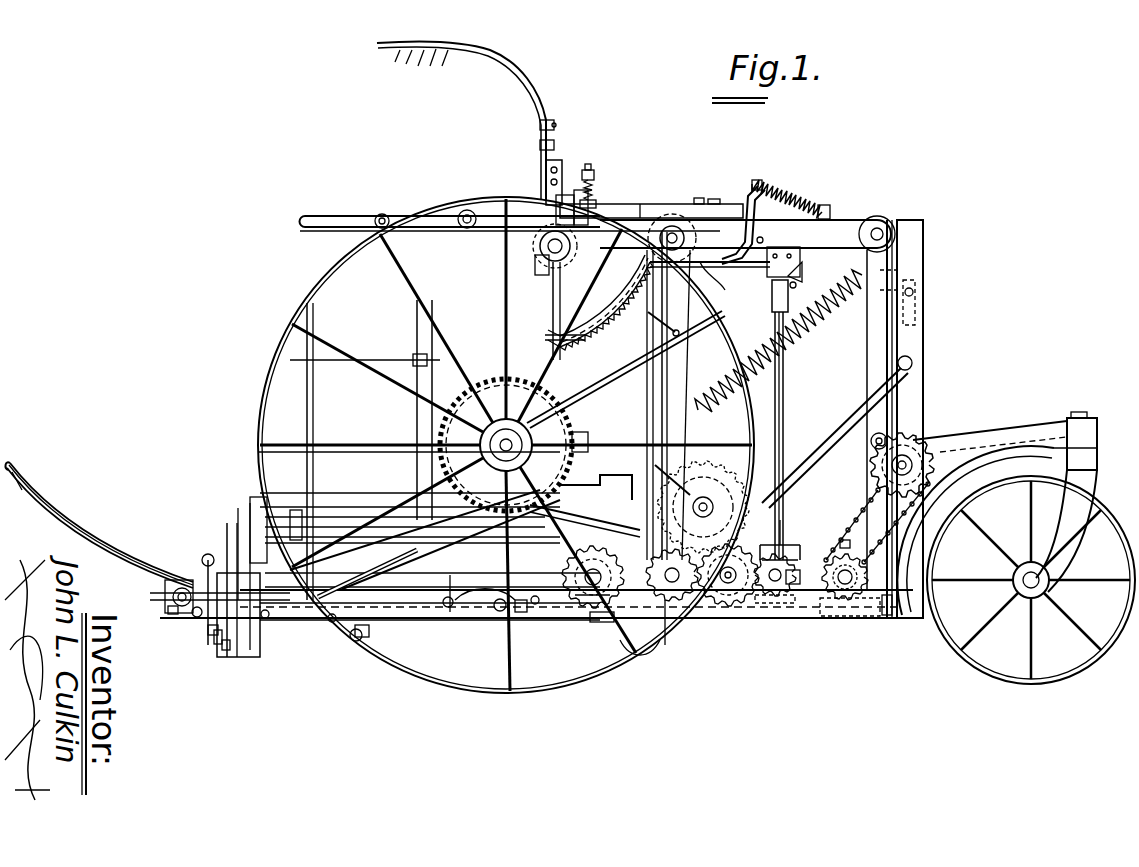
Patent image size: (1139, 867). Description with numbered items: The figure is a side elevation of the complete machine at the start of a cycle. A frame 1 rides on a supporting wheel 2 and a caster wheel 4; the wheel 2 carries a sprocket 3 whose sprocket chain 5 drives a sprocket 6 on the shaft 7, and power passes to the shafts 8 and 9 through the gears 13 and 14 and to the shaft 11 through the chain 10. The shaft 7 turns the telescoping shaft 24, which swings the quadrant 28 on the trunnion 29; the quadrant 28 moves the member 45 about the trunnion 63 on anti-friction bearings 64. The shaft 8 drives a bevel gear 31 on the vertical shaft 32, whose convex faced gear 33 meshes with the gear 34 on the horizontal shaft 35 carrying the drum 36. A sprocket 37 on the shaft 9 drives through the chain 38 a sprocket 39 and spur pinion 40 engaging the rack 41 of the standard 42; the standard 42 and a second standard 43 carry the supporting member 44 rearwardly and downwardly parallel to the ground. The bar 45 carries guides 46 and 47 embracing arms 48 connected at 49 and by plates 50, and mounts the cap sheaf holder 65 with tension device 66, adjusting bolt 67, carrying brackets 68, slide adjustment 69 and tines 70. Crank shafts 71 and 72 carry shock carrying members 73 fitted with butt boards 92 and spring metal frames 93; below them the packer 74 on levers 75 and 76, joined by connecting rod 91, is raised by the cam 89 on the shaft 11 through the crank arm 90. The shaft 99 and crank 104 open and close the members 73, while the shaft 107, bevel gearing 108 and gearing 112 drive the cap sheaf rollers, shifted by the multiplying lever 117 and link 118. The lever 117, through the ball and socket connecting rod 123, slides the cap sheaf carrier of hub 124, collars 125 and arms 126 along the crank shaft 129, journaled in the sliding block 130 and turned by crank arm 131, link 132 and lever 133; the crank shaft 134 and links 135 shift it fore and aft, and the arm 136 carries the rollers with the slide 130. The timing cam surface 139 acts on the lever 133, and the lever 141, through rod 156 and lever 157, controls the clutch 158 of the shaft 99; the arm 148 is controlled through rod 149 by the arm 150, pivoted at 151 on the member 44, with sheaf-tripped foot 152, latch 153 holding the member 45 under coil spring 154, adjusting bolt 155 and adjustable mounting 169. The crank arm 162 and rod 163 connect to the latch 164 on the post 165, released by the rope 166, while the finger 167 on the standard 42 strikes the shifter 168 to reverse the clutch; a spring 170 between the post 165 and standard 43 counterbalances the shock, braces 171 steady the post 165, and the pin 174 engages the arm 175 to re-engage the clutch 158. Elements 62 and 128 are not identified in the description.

The frame 1 is at (740, 632).
The supporting wheel 2 is at (503, 694).
The sprocket 3 is at (481, 452).
The caster wheel 4 is at (957, 652).
The sprocket chain 5 is at (588, 433).
The sprocket 6 is at (726, 608).
The shaft 7 is at (692, 612).
The shaft 8 is at (775, 600).
The shaft 9 is at (812, 606).
The chain 10 is at (656, 598).
The shaft 11 is at (585, 616).
The gear 13 is at (765, 606).
The gear 14 is at (792, 600).
The telescoping shaft 24 is at (688, 374).
The quadrant 28 is at (604, 314).
The trunnion 29 is at (672, 226).
The bevel gear 31 is at (782, 543).
The vertically arranged shaft 32 is at (785, 418).
The convex faced gear 33 is at (772, 290).
The convex faced gear 34 is at (802, 270).
The horizontal shaft 35 is at (757, 267).
The drum or cylinder 36 is at (548, 264).
The sprocket 37 is at (853, 536).
The chain 38 is at (846, 497).
The sprocket 39 is at (912, 413).
The spur pinion 40 is at (906, 443).
The rack 41 is at (972, 446).
The standard 42 is at (862, 382).
The second standard 43 is at (680, 358).
The supporting member 44 is at (850, 222).
The bar 45 is at (725, 208).
The guide 46 is at (578, 205).
The guide 47 is at (560, 200).
The arms 48 is at (352, 212).
The connection 49 is at (698, 198).
The plates 50 is at (713, 199).
The arm 62 is at (660, 316).
The trunnion 63 is at (543, 242).
The anti-friction bearings 64 is at (548, 254).
The adjustable cap sheaf holder 65 is at (538, 82).
The tension device 66 is at (596, 196).
The adjusting bolt 67 is at (590, 170).
The carrying brackets 68 is at (548, 170).
The slide adjustment 69 is at (545, 129).
The tines 70 is at (440, 56).
The crank shaft 71 is at (340, 489).
The crank shaft 72 is at (392, 494).
The shock carrying members 73 is at (432, 384).
The packer 74 is at (450, 614).
The lever 75 is at (490, 602).
The lever 76 is at (448, 606).
The cam 89 is at (600, 624).
The crank arm 90 is at (577, 598).
The connecting rod 91 is at (535, 605).
The butt boards 92 is at (632, 472).
The spring metal frames 93 is at (314, 410).
The shaft 99 is at (474, 585).
The crank 104 is at (217, 580).
The shaft 107 is at (228, 545).
The bevel gearing 108 is at (255, 540).
The gearing 112 is at (210, 560).
The multiplying lever 117 is at (228, 650).
The link 118 is at (218, 644).
The ball and socket connecting rod 123 is at (212, 635).
The hub 124 is at (172, 612).
The collars 125 is at (165, 594).
The tine or arm 126 is at (67, 518).
The arm end 128 is at (17, 470).
The crank shaft 129 is at (197, 616).
The sliding block 130 is at (290, 620).
The crank arm 131 is at (332, 622).
The link 132 is at (360, 533).
The lever 133 is at (458, 521).
The transversely arranged crank shaft 134 is at (376, 633).
The links 135 is at (356, 641).
The arm 136 is at (360, 640).
The cam surface 139 is at (708, 492).
The lever 141 is at (665, 648).
The arm 148 is at (622, 517).
The rod 149 is at (660, 400).
The arm 150 is at (600, 302).
The pivot 151 is at (760, 240).
The foot 152 is at (545, 340).
The latch 153 is at (766, 186).
The coil spring 154 is at (792, 196).
The bolt 155 is at (760, 188).
The rod 156 is at (640, 655).
The lever 157 is at (521, 613).
The clutch 158 is at (500, 612).
The crank arm 162 is at (886, 620).
The rod 163 is at (912, 381).
The latch 164 is at (912, 298).
The post 165 is at (915, 250).
The rope or cable 166 is at (823, 333).
The finger 167 is at (848, 554).
The shifter 168 is at (856, 628).
The adjustable mounting 169 is at (722, 280).
The spring 170 is at (781, 378).
The braces 171 is at (824, 450).
The pin 174 is at (704, 473).
The arm 175 is at (656, 466).